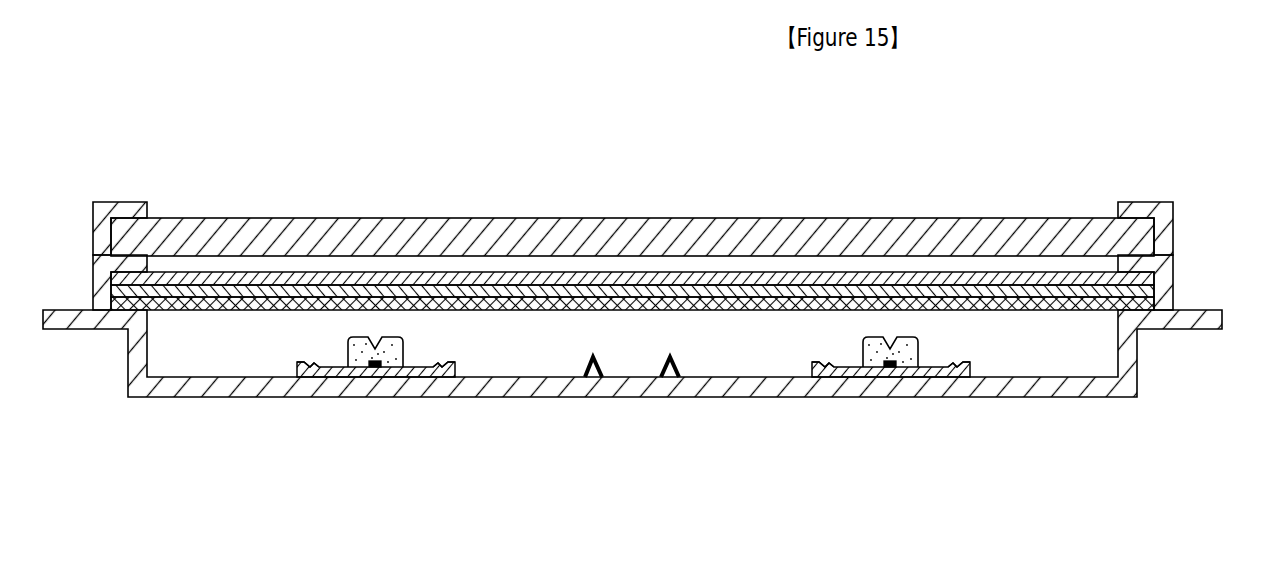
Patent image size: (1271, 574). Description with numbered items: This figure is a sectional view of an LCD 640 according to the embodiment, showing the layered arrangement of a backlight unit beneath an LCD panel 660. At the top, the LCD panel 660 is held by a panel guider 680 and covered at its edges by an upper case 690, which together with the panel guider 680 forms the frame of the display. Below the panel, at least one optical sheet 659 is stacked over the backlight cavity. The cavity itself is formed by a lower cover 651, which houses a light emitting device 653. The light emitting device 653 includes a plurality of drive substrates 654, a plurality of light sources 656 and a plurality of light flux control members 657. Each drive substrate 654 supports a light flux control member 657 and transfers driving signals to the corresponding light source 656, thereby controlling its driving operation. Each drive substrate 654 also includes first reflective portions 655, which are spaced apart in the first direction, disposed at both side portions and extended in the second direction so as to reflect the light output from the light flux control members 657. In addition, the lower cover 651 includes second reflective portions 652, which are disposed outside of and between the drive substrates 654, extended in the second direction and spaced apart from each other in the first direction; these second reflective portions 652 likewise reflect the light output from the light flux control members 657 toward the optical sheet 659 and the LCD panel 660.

The LCD 640 is at (1237, 162).
The lower cover 651 is at (746, 390).
The second reflective portions 652 is at (589, 369).
The light emitting device 653 is at (652, 415).
The drive substrates 654 is at (400, 370).
The first reflective portions 655 is at (437, 363).
The light sources 656 is at (375, 368).
The light flux control members 657 is at (432, 452).
The optical sheet 659 is at (657, 311).
The LCD panel 660 is at (601, 218).
The panel guider 680 is at (1174, 278).
The upper case 690 is at (1174, 222).